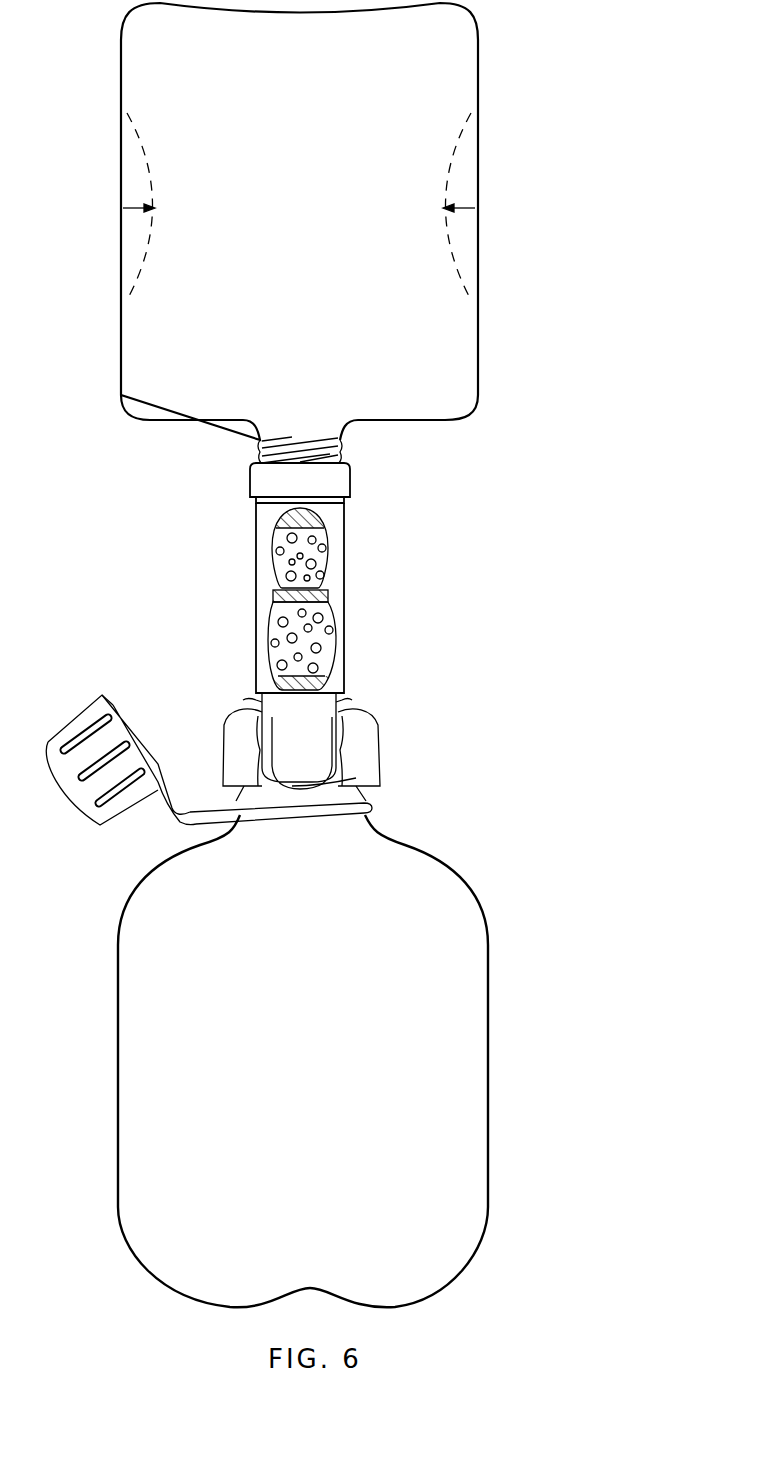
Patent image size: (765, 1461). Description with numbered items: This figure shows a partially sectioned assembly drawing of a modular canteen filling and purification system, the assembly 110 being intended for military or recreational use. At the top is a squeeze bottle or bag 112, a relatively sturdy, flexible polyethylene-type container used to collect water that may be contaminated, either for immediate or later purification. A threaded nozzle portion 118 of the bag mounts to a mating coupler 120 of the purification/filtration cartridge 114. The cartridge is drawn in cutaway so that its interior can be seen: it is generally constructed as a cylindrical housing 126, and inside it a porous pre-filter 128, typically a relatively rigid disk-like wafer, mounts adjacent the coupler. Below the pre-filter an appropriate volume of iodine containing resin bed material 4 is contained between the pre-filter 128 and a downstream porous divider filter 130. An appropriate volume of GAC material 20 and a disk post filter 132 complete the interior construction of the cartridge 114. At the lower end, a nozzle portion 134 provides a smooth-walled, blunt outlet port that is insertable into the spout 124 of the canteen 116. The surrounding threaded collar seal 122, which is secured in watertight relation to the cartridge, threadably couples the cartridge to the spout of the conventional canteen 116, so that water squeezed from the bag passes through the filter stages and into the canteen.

The assembly 110 is at (551, 140).
The squeeze bottle or bag 112 is at (478, 372).
The threaded neck 118 is at (338, 446).
The mating coupler 120 is at (250, 486).
The purification/filtration cartridge 114 is at (345, 636).
The porous pre-filter 128 is at (312, 521).
The iodine containing resin bed material 4 is at (313, 566).
The porous divider filter 130 is at (285, 592).
The cylindrical housing 126 is at (262, 631).
The GAC material 20 is at (317, 650).
The disk post filter 132 is at (285, 686).
The nozzle portion 134 is at (293, 750).
The threaded collar seal 122 is at (385, 746).
The spout 124 is at (365, 795).
The canteen 116 is at (488, 1030).